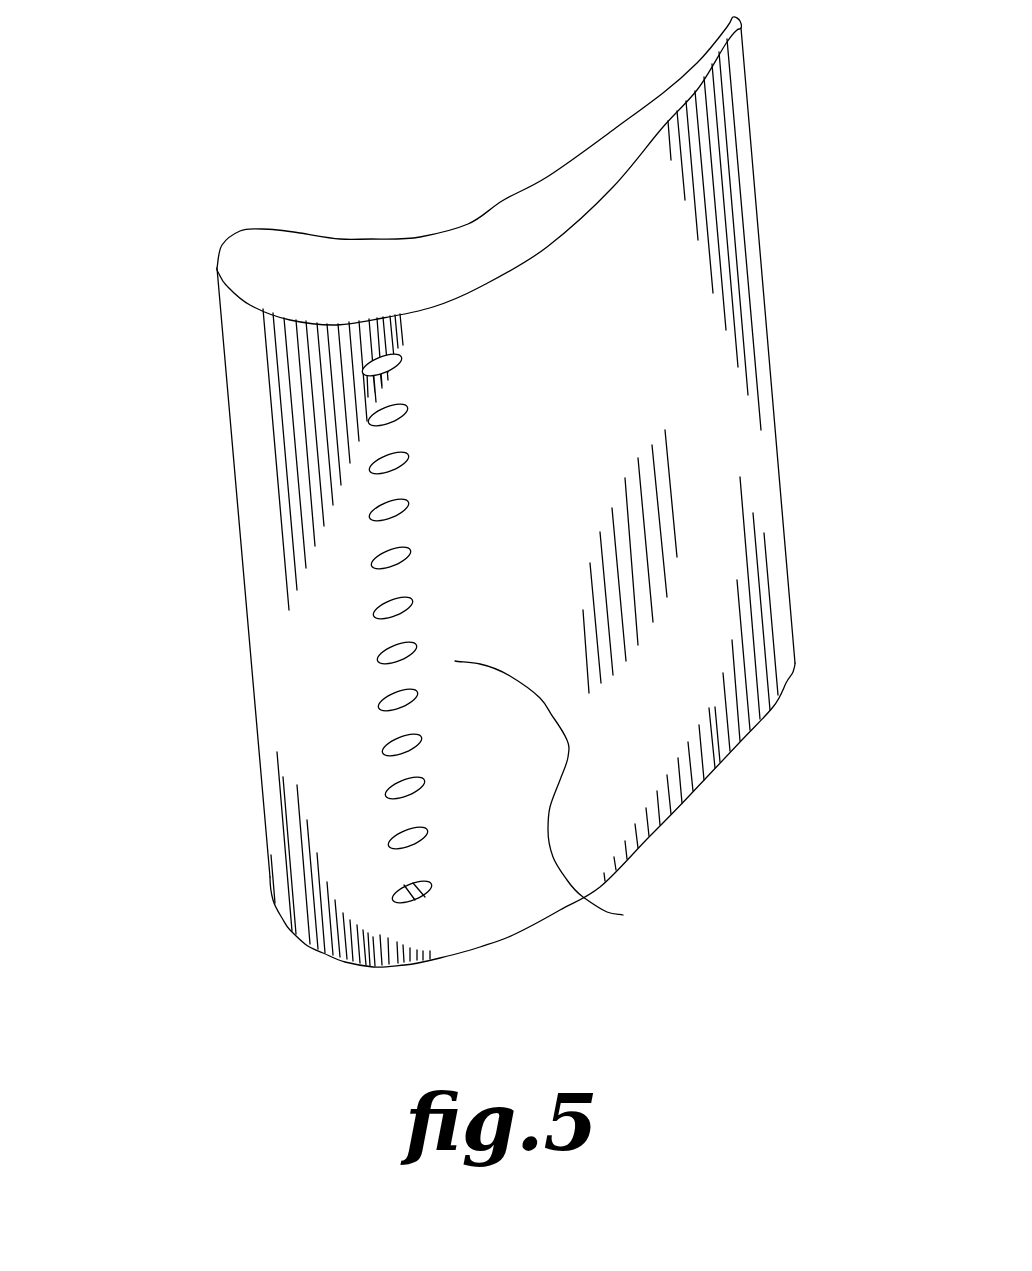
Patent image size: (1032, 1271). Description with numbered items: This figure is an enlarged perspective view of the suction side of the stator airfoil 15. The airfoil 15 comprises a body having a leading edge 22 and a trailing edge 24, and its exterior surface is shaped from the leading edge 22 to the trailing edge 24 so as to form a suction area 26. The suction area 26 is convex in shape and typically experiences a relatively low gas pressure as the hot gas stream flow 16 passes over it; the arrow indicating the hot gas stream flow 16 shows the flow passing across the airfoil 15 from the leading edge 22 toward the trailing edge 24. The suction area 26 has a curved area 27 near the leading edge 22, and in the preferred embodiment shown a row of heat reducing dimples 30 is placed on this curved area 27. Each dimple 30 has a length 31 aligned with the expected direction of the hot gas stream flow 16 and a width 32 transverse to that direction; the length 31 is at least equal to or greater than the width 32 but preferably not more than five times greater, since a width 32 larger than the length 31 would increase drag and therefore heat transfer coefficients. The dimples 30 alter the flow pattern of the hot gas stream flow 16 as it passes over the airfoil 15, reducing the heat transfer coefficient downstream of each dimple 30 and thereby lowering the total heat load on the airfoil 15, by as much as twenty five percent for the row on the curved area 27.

The stator airfoil 15 is at (589, 363).
The hot gas stream flow 16 is at (188, 541).
The leading edge 22 is at (258, 413).
The trailing edge 24 is at (772, 398).
The suction area 26 is at (767, 715).
The curved area 27 is at (564, 798).
The heat reducing dimple 30 is at (373, 617).
The length 31 is at (420, 888).
The width 32 is at (408, 889).